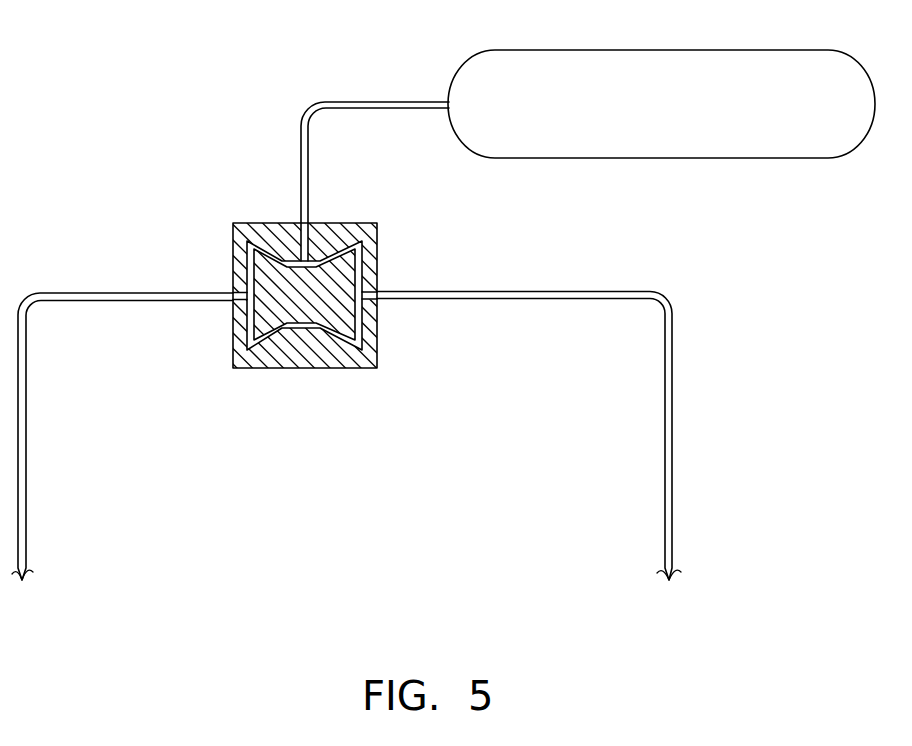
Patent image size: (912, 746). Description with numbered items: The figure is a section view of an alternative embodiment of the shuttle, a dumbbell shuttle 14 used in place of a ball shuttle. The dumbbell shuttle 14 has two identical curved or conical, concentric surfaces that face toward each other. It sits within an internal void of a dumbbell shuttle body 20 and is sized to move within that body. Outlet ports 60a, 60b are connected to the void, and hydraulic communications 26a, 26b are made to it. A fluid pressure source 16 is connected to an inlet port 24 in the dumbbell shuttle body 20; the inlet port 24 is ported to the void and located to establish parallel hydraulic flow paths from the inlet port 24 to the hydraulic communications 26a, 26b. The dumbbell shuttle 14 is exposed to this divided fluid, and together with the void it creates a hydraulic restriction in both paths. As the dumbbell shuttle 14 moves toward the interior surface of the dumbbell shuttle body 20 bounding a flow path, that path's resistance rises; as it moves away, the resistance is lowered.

The fluid pressure source 16 is at (467, 63).
The inlet port 24 is at (300, 223).
The dumbbell shuttle body 20 is at (235, 332).
The dumbbell shuttle 14 is at (312, 324).
The outlet port 60a is at (377, 291).
The outlet port 60b is at (233, 291).
The hydraulic communication 26a is at (665, 512).
The hydraulic communication 26b is at (26, 506).